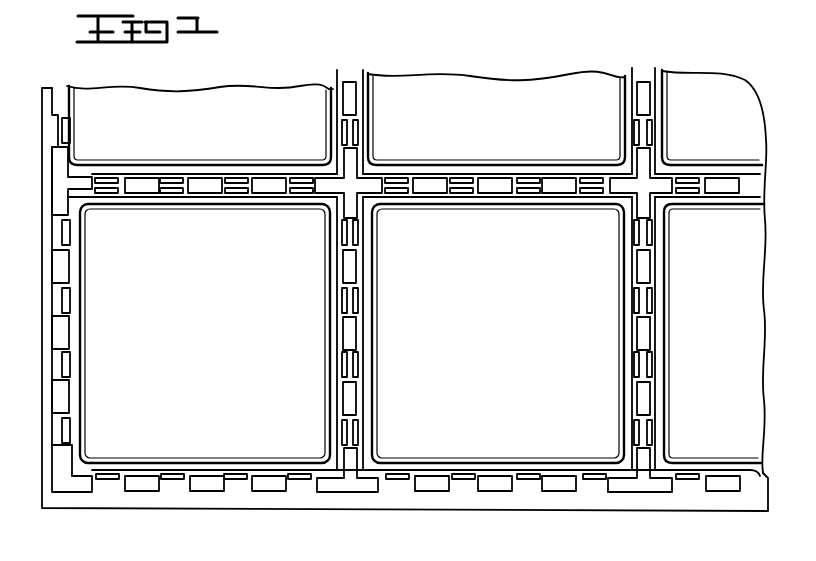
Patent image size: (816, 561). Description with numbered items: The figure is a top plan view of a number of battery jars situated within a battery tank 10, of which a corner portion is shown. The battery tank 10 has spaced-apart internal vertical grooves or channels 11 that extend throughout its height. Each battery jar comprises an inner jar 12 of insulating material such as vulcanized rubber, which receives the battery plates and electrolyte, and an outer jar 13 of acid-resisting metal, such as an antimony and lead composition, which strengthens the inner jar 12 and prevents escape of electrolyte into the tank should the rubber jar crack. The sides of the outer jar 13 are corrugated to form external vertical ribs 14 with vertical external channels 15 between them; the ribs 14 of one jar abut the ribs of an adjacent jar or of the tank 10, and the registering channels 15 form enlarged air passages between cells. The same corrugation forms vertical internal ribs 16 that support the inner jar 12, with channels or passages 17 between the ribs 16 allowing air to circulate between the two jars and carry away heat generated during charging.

The battery tank 10 is at (60, 503).
The internal vertical grooves or channels 11 is at (50, 328).
The inner jar 12 is at (416, 266).
The outer jar 13 is at (60, 280).
The external vertical ribs 14 is at (242, 483).
The vertical external channels 15 is at (497, 178).
The vertical internal ribs 16 is at (272, 192).
The channels or passages 17 is at (305, 478).